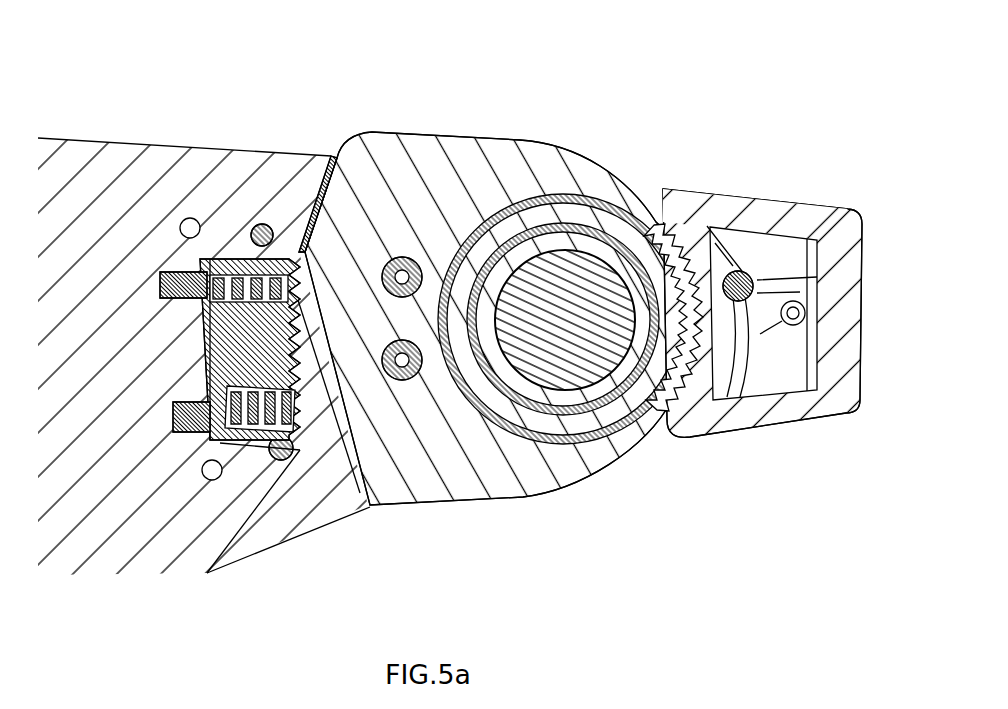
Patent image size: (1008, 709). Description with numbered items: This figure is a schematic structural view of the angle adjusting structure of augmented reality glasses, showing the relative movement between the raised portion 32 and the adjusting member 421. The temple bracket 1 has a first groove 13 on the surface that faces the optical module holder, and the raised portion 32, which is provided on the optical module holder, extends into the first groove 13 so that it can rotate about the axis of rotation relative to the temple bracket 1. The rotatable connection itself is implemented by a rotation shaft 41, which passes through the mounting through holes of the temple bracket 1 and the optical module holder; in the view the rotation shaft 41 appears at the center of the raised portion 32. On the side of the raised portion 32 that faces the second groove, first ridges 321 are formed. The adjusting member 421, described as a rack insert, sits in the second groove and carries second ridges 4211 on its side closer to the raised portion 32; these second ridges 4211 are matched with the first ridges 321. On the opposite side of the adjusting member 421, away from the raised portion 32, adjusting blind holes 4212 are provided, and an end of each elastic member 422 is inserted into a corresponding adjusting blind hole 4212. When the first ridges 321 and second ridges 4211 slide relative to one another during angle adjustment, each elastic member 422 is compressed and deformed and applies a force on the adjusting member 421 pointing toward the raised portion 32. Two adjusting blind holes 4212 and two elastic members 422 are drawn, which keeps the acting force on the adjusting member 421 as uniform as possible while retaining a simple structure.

The temple bracket 1 is at (302, 515).
The first groove 13 is at (687, 397).
The raised portion 32 is at (420, 177).
The first ridge 321 is at (307, 237).
The rotation shaft 41 is at (565, 298).
The adjusting member 421 is at (233, 357).
The second ridge 4211 is at (302, 387).
The adjusting blind hole 4212 is at (237, 258).
The elastic member 422 is at (185, 405).